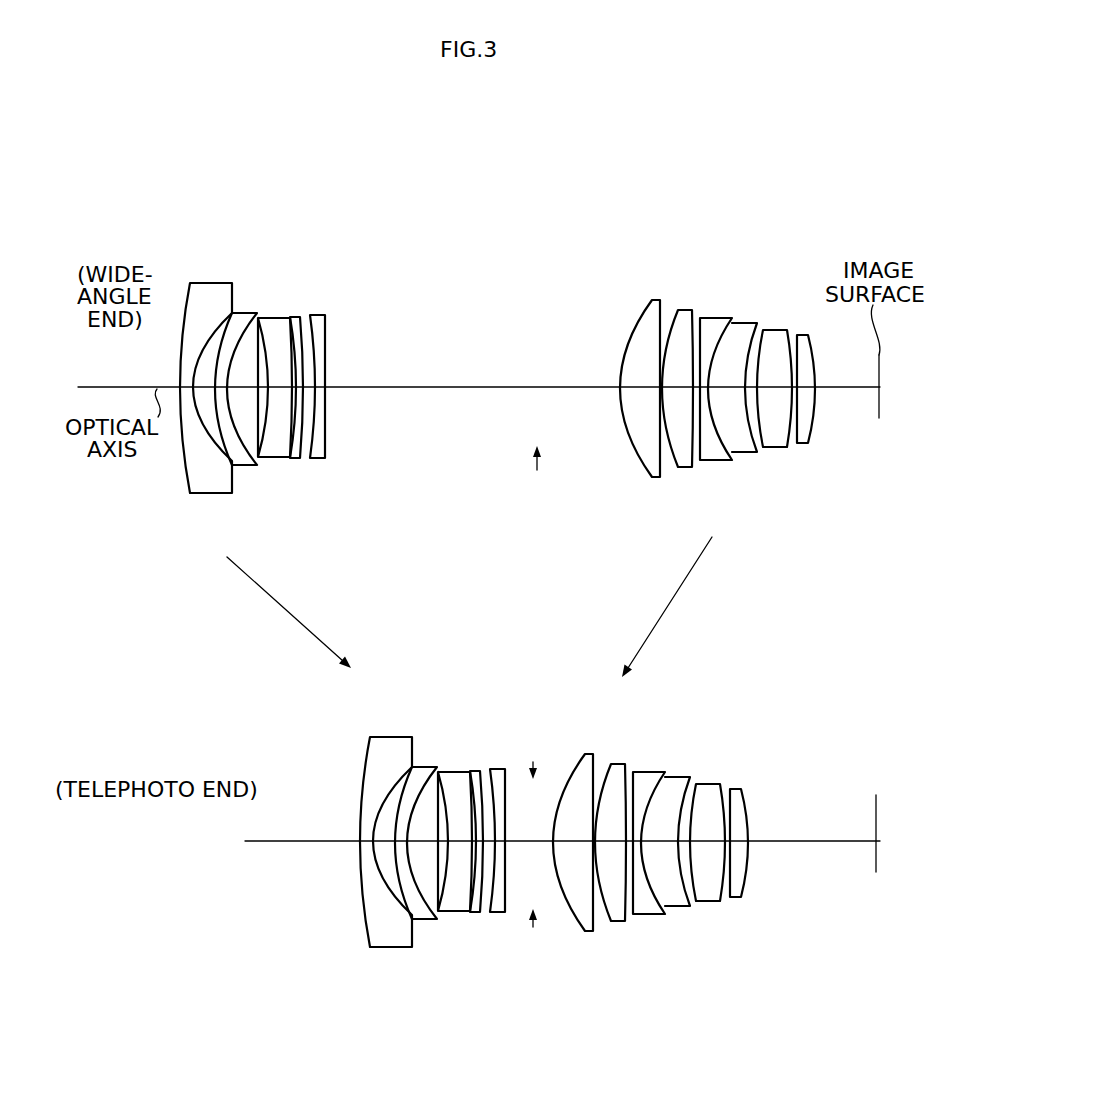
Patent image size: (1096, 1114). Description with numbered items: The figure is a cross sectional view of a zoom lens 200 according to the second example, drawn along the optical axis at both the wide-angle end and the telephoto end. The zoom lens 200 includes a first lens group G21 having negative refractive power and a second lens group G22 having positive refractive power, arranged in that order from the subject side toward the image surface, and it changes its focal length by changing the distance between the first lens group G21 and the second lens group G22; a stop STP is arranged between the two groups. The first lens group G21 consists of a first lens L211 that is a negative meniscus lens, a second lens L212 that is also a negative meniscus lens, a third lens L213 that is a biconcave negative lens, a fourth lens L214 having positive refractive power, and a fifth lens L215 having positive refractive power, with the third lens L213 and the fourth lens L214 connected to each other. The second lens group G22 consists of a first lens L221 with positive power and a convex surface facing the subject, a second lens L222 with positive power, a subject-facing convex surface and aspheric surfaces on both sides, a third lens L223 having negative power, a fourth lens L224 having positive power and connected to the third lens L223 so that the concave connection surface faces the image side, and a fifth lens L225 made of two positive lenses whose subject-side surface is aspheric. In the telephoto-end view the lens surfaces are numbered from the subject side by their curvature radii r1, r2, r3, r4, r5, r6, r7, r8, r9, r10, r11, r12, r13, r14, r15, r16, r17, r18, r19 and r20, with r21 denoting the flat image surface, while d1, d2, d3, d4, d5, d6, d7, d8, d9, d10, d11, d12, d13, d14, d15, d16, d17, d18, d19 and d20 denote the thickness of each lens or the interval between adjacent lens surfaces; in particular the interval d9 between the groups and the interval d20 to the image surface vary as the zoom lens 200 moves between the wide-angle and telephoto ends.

The zoom lens 200 is at (478, 182).
The first lens group G21 is at (385, 222).
The second lens group G22 is at (828, 226).
The first lens L211 is at (213, 292).
The second lens L212 is at (245, 315).
The third lens L213 is at (270, 327).
The fourth lens L214 is at (293, 318).
The fifth lens L215 is at (327, 318).
The first lens L221 is at (645, 320).
The second lens L222 is at (678, 310).
The third lens L223 is at (704, 318).
The fourth lens L224 is at (744, 323).
The fifth lens L225 is at (818, 325).
The stop STP is at (533, 316).
The curvature radius r1 is at (367, 760).
The curvature radius r2 is at (392, 763).
The curvature radius r3 is at (410, 760).
The curvature radius r4 is at (420, 762).
The curvature radius r5 is at (437, 770).
The curvature radius r6 is at (457, 768).
The curvature radius r7 is at (478, 768).
The curvature radius r8 is at (490, 768).
The curvature radius r9 is at (507, 777).
The curvature radius r10 is at (572, 760).
The curvature radius r11 is at (595, 760).
The curvature radius r12 is at (607, 762).
The curvature radius r13 is at (622, 770).
The curvature radius r14 is at (635, 775).
The curvature radius r15 is at (663, 777).
The curvature radius r16 is at (678, 783).
The curvature radius r17 is at (697, 782).
The curvature radius r18 is at (722, 787).
The curvature radius r19 is at (727, 797).
The curvature radius r20 is at (743, 805).
The curvature radius r21 is at (876, 823).
The lens thickness d1 is at (370, 843).
The lens surface interval d2 is at (372, 843).
The lens thickness d3 is at (400, 845).
The lens surface interval d4 is at (428, 843).
The lens thickness d5 is at (453, 845).
The lens thickness d6 is at (465, 845).
The lens surface interval d7 is at (480, 845).
The lens thickness d8 is at (502, 845).
The lens surface interval d9 is at (532, 843).
The lens thickness d10 is at (577, 843).
The lens surface interval d11 is at (595, 843).
The lens thickness d12 is at (622, 843).
The lens surface interval d13 is at (640, 843).
The lens thickness d14 is at (647, 843).
The lens thickness d15 is at (672, 843).
The lens surface interval d16 is at (700, 843).
The lens thickness d17 is at (720, 843).
The lens surface interval d18 is at (738, 843).
The lens thickness d19 is at (748, 843).
The lens surface interval d20 is at (835, 843).